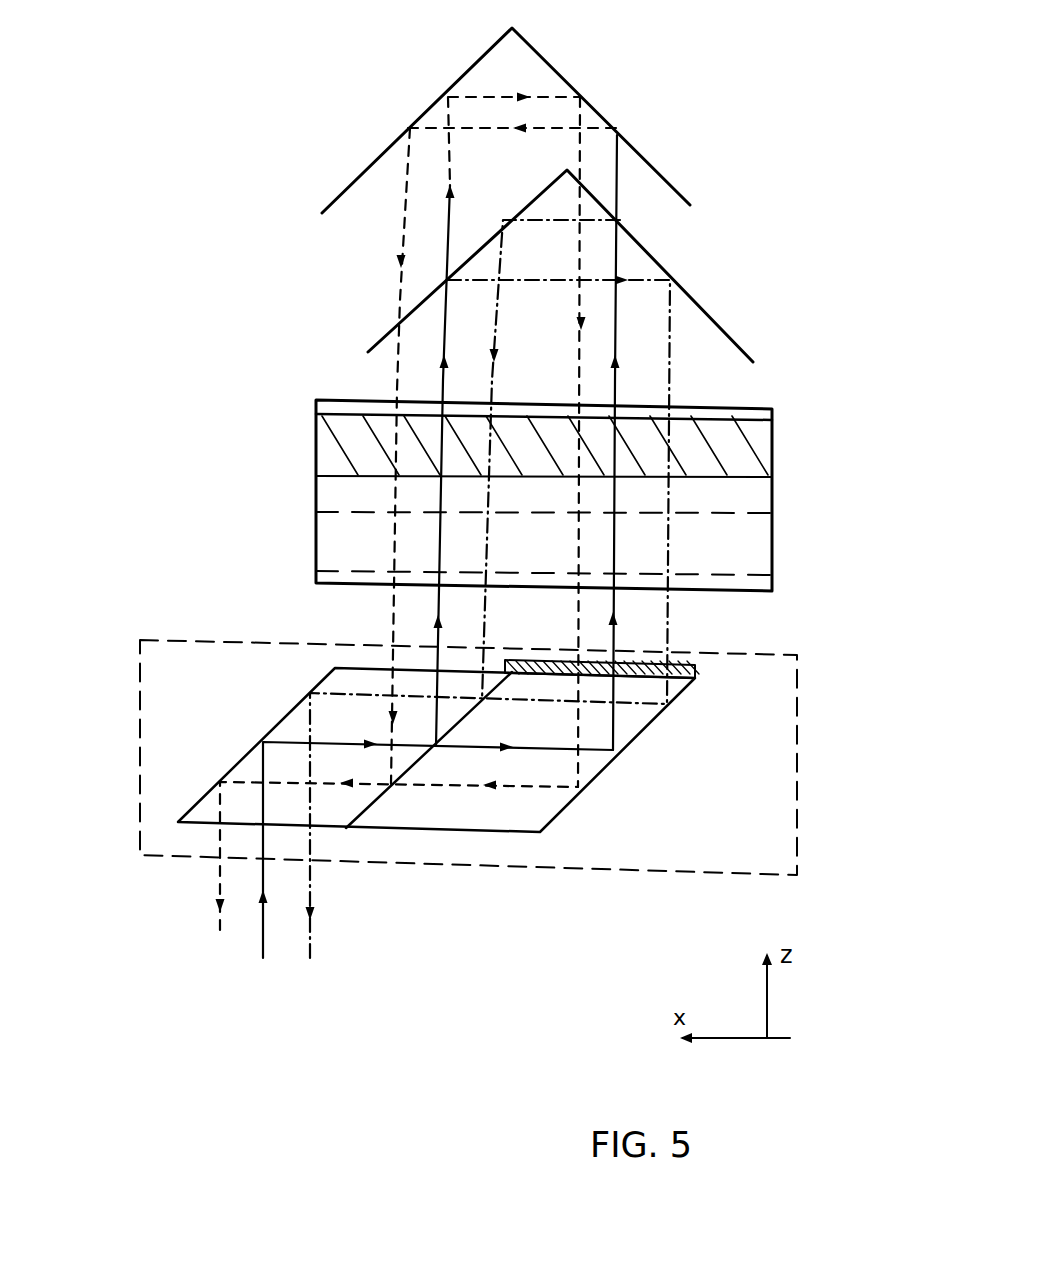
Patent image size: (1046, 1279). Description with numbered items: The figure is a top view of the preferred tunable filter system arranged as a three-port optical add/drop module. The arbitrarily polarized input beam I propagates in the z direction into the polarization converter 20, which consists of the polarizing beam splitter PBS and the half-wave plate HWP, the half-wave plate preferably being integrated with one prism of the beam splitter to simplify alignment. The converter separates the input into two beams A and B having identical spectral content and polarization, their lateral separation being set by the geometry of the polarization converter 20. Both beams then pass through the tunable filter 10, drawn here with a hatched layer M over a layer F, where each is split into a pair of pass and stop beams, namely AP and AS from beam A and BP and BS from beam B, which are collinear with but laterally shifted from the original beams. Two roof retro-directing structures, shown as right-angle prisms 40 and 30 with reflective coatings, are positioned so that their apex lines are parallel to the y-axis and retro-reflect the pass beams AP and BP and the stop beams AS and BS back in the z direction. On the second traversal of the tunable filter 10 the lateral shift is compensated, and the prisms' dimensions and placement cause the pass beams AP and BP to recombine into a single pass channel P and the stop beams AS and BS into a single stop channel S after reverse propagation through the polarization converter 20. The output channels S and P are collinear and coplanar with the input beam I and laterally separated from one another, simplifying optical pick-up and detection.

The tunable filter 10 is at (533, 504).
The polarization converter 20 is at (416, 757).
The right-angle prism 30 is at (698, 299).
The right-angle prism 40 is at (647, 160).
The reflective layer M is at (323, 440).
The substrate layer F is at (330, 528).
The polarizing beam splitter PBS is at (597, 795).
The half-wave plate HWP is at (700, 670).
The beam A is at (440, 620).
The beam B is at (615, 637).
The stop beam AS is at (508, 93).
The pass beam AP is at (672, 320).
The stop beam BS is at (398, 243).
The pass beam BP is at (592, 224).
The stop channel S is at (197, 937).
The input beam I is at (262, 940).
The pass channel P is at (312, 947).